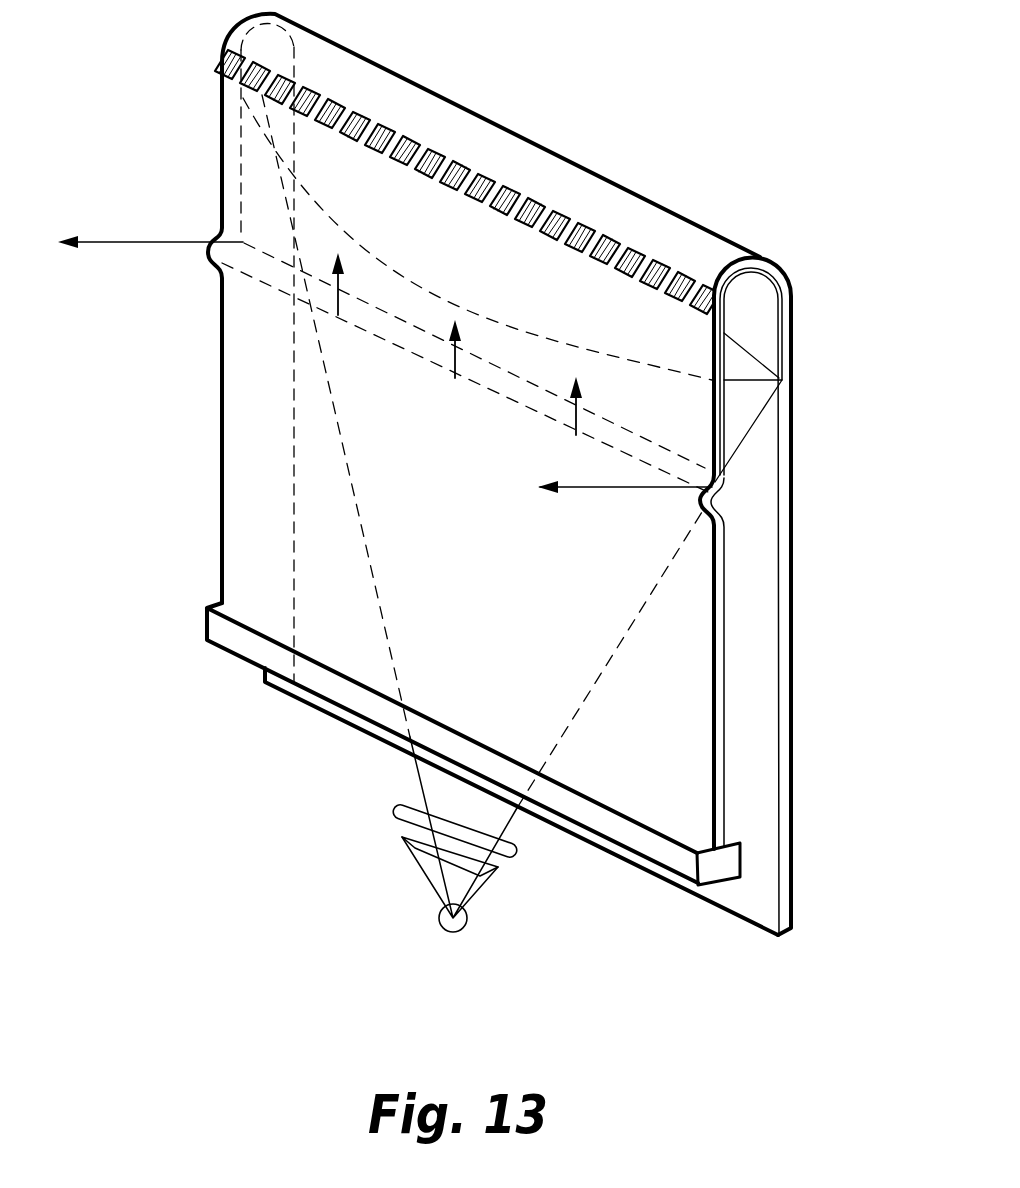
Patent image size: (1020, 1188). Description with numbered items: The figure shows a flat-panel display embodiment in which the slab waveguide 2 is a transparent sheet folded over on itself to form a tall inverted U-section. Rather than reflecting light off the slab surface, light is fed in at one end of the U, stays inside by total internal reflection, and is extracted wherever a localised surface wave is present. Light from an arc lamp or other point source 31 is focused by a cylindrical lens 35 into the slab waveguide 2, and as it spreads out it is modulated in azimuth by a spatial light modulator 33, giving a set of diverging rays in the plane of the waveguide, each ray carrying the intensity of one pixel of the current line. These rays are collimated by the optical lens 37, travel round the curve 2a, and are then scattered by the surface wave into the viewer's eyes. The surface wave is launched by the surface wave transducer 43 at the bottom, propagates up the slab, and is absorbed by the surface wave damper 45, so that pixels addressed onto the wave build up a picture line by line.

The slab waveguide 2 is at (800, 752).
The curve 2a is at (763, 258).
The arc lamp 31 is at (455, 933).
The spatial light modulator 33 is at (494, 869).
The cylindrical lens 35 is at (390, 803).
The optical lens 37 is at (752, 343).
The surface wave transducer 43 is at (725, 884).
The surface wave damper 45 is at (570, 213).